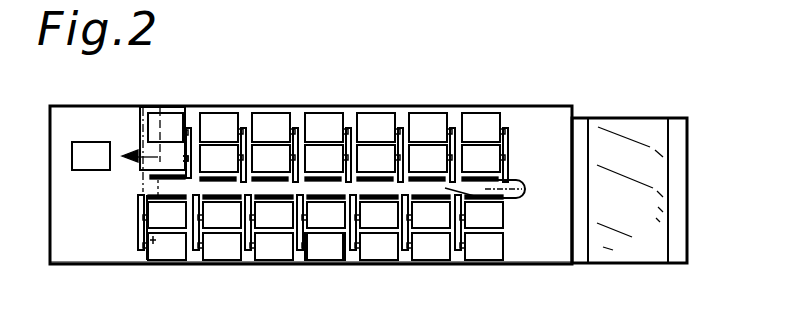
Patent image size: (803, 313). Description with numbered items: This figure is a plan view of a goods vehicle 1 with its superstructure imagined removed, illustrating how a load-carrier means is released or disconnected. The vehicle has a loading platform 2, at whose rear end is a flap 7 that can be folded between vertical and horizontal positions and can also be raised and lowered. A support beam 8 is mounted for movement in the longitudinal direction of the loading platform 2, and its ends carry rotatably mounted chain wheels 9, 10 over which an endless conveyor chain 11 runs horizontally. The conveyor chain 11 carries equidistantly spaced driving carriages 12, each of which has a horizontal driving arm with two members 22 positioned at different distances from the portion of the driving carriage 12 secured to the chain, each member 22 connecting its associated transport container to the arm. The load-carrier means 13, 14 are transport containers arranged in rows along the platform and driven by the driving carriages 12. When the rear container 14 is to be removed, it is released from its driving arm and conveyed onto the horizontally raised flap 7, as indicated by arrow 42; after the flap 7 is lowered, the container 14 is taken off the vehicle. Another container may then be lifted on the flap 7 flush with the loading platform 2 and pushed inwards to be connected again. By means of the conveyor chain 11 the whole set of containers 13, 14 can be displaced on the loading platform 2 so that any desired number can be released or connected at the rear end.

The goods vehicle 1 is at (687, 165).
The loading platform 2 is at (525, 135).
The flap 7 is at (78, 242).
The support beam 8 is at (487, 202).
The chain wheel 9 is at (526, 193).
The chain wheel 10 is at (158, 185).
The endless conveyor chain 11 is at (340, 240).
The driving carriage 12 is at (224, 181).
The load-carrier means 13 is at (157, 123).
The load-carrier means 14 is at (83, 160).
The member 22 is at (183, 158).
The arrow 42 is at (128, 152).